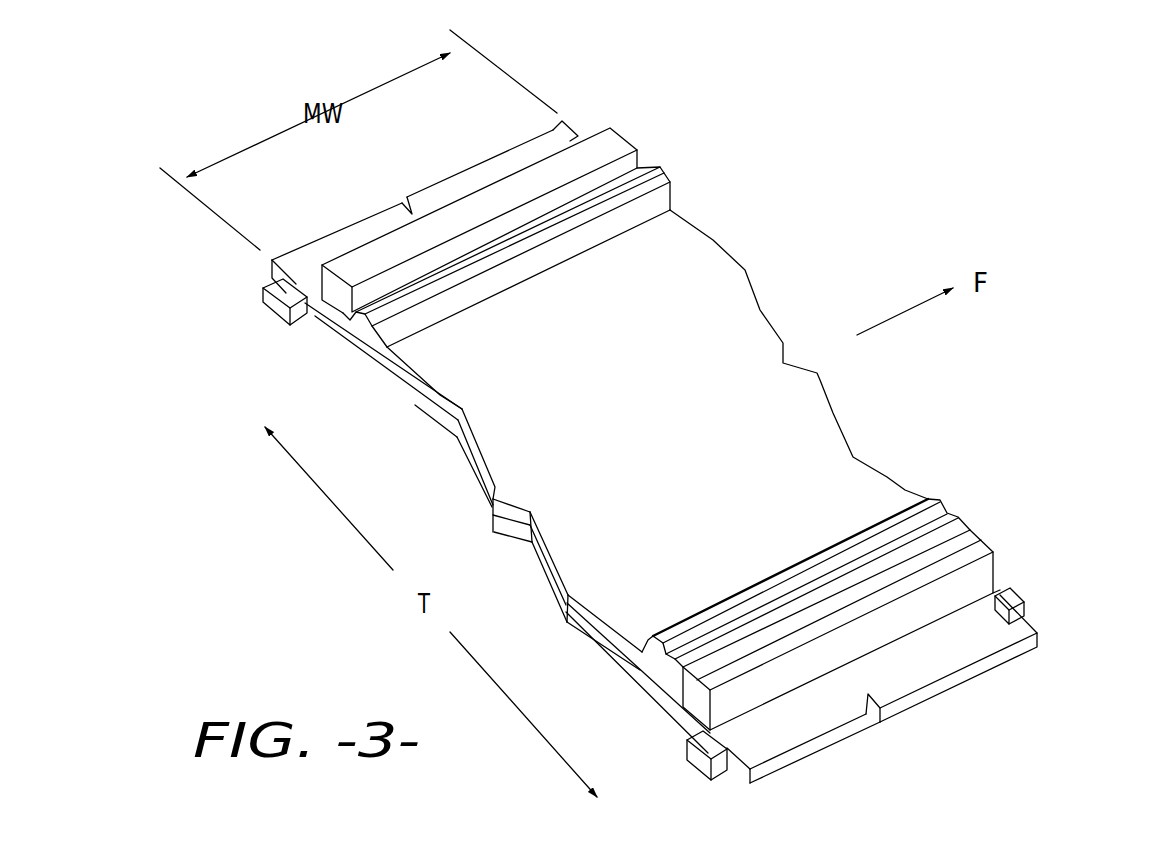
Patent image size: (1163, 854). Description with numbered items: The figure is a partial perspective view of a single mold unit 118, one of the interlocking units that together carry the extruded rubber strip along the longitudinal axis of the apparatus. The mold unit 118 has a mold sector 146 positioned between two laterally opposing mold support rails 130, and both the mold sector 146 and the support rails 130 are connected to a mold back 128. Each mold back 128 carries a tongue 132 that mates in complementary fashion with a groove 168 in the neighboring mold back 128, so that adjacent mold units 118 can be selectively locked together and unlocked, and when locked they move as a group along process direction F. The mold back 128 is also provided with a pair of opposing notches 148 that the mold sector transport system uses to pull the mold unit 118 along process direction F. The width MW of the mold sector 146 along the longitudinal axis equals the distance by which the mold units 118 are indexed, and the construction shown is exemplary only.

The mold unit 118 is at (793, 160).
The mold back 128 is at (507, 162).
The mold support rail 130 is at (610, 147).
The tongue 132 is at (267, 307).
The mold sector 146 is at (823, 457).
The notch 148 is at (393, 200).
The groove 168 is at (557, 136).